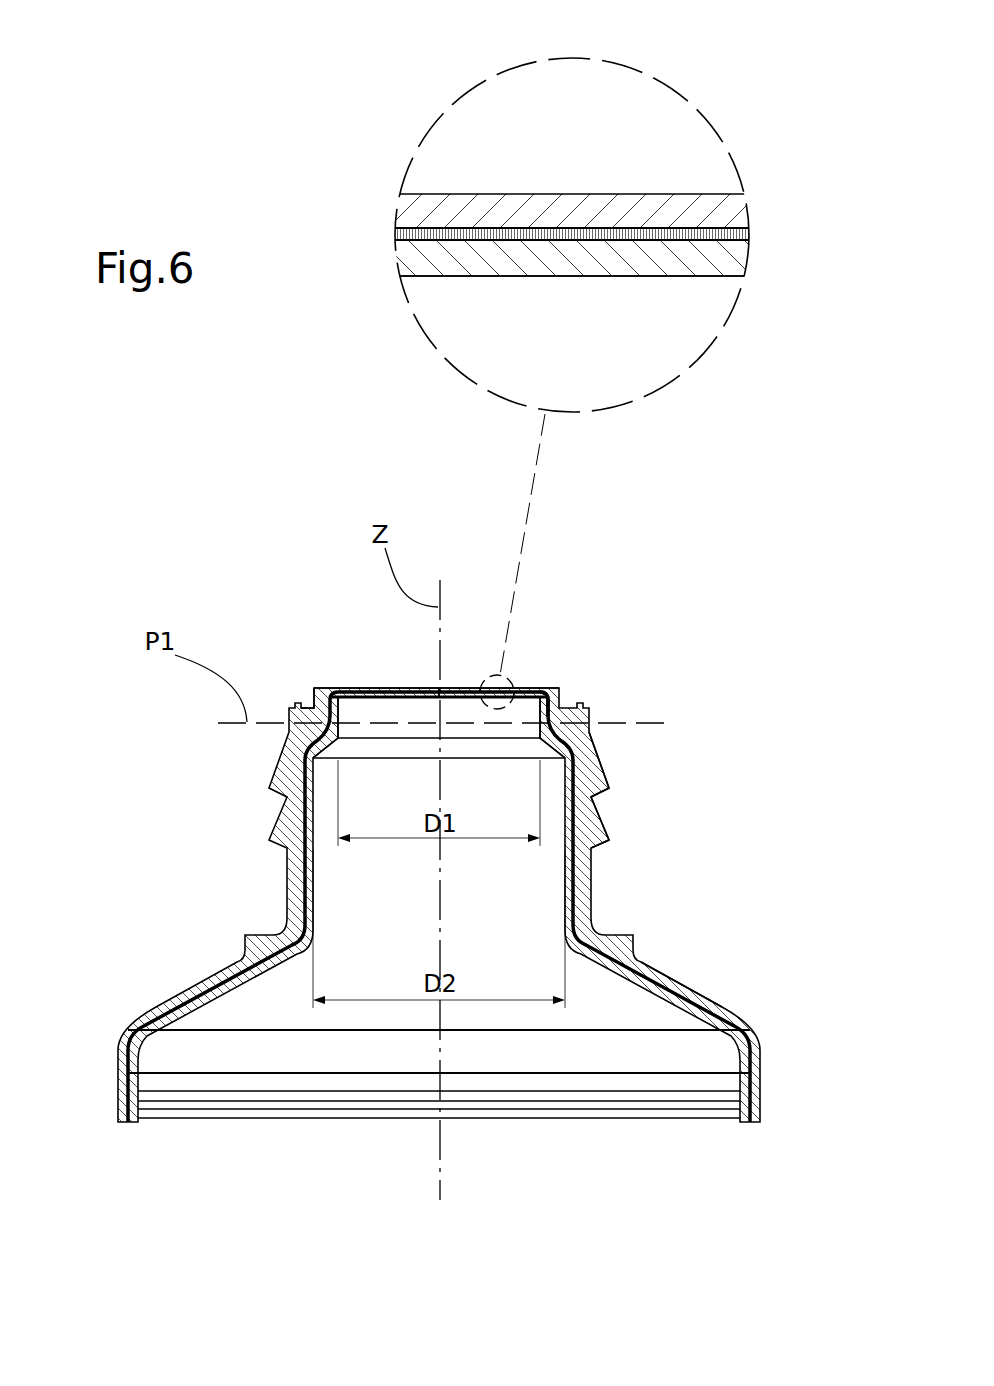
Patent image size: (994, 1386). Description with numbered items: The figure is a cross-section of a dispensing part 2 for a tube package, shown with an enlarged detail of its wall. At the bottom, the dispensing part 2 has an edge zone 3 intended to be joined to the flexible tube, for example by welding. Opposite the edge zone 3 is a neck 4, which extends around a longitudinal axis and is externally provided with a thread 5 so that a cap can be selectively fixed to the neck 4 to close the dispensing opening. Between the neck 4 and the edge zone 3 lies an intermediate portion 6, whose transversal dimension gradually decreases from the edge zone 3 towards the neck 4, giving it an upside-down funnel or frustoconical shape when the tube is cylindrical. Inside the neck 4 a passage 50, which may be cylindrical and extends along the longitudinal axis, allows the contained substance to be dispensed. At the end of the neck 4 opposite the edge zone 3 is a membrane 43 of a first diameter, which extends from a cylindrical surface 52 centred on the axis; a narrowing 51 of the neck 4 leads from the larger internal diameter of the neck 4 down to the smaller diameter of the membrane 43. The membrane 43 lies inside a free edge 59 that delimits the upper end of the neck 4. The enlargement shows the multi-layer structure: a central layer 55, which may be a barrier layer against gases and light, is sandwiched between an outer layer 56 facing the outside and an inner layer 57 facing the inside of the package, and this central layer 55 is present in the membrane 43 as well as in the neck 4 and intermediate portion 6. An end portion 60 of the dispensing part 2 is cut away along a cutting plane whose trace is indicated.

The dispensing part 2 is at (682, 837).
The edge zone 3 is at (700, 1122).
The neck 4 is at (310, 852).
The thread 5 is at (603, 773).
The intermediate portion 6 is at (697, 990).
The membrane 43 is at (690, 265).
The passage 50 is at (368, 901).
The narrowing 51 is at (327, 755).
The cylindrical surface 52 is at (528, 688).
The central layer 55 is at (648, 230).
The outer layer 56 is at (505, 205).
The inner layer 57 is at (467, 260).
The free edge 59 is at (545, 687).
The end portion 60 is at (296, 684).